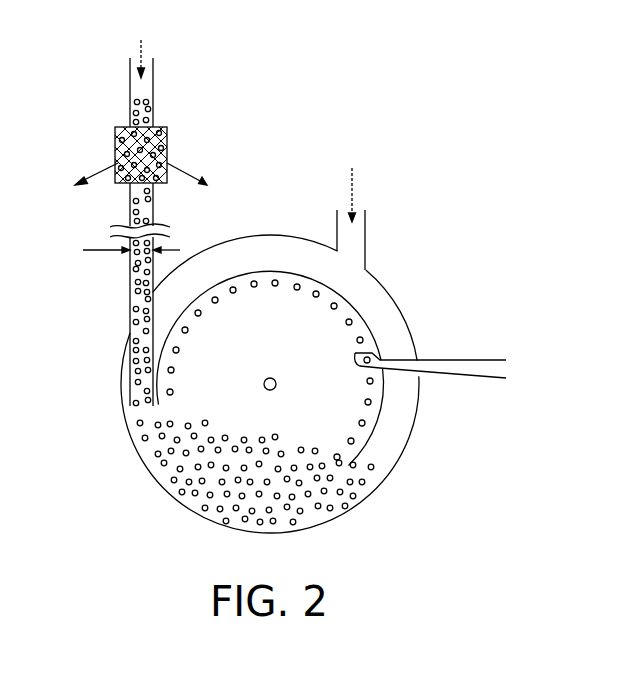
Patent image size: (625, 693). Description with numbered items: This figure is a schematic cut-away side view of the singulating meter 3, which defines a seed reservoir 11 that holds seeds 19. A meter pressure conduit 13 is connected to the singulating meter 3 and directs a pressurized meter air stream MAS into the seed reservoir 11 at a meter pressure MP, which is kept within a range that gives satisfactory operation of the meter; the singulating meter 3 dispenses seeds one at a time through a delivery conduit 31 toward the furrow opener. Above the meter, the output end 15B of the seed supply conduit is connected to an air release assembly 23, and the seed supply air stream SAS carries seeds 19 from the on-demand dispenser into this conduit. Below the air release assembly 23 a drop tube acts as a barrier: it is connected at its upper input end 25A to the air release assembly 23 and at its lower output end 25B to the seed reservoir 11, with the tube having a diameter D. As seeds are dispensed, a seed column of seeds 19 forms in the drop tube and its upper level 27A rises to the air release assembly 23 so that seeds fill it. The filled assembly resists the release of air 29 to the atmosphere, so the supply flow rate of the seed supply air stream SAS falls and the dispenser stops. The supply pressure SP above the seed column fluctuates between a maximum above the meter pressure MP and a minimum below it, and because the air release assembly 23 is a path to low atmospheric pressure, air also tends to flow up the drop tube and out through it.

The singulating meter 3 is at (400, 306).
The meter pressure conduit 13 is at (366, 228).
The meter air stream MAS is at (353, 175).
The delivery conduit 31 is at (468, 359).
The meter pressure MP is at (380, 455).
The output end of the seed supply conduit 15B is at (130, 97).
The seed supply air stream SAS is at (142, 48).
The supply pressure SP is at (141, 87).
The upper level of the seed column 27A is at (146, 113).
The air release assembly 23 is at (168, 147).
The air 29 is at (183, 178).
The upper input end of the drop tube 25A is at (130, 203).
The tube diameter D is at (123, 251).
The lower output end of the drop tube 25B is at (130, 333).
The seeds 19 is at (141, 286).
The seed reservoir 11 is at (279, 497).